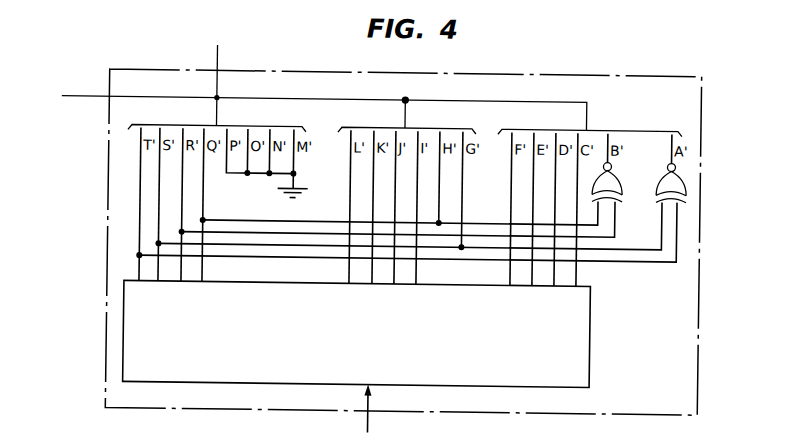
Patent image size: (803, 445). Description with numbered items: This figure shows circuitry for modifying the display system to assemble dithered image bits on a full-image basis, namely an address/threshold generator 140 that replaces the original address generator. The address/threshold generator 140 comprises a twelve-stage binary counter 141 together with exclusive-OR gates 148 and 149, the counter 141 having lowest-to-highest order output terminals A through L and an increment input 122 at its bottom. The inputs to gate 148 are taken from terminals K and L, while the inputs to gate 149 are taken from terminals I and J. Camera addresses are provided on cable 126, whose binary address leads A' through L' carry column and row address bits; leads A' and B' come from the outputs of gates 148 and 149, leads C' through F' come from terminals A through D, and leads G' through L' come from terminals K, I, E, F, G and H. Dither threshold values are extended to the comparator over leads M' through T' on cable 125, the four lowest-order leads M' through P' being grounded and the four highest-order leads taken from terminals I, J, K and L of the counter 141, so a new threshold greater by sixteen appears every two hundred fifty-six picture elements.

The increment input line 122 is at (371, 426).
The cable 125 is at (216, 59).
The cable 126 is at (78, 99).
The address/threshold generator 140 is at (108, 300).
The 12-stage binary counter 141 is at (591, 310).
The exclusive-OR gate 148 is at (656, 190).
The exclusive-OR gate 149 is at (621, 182).